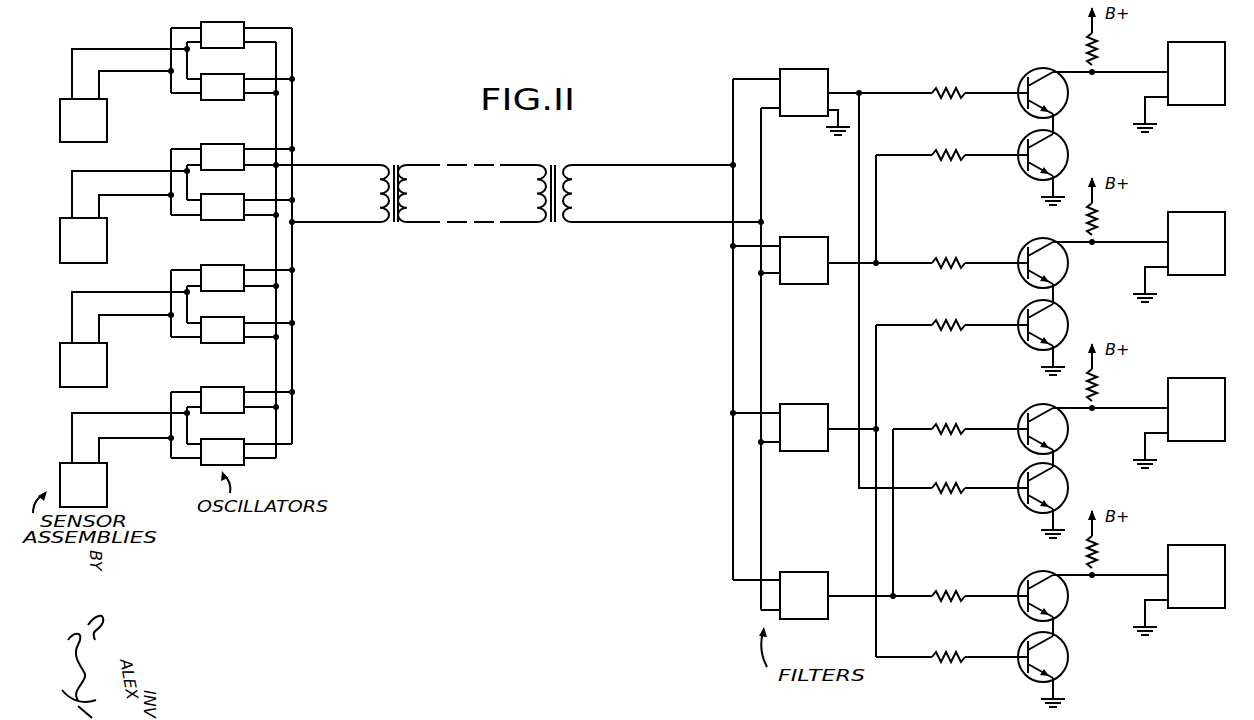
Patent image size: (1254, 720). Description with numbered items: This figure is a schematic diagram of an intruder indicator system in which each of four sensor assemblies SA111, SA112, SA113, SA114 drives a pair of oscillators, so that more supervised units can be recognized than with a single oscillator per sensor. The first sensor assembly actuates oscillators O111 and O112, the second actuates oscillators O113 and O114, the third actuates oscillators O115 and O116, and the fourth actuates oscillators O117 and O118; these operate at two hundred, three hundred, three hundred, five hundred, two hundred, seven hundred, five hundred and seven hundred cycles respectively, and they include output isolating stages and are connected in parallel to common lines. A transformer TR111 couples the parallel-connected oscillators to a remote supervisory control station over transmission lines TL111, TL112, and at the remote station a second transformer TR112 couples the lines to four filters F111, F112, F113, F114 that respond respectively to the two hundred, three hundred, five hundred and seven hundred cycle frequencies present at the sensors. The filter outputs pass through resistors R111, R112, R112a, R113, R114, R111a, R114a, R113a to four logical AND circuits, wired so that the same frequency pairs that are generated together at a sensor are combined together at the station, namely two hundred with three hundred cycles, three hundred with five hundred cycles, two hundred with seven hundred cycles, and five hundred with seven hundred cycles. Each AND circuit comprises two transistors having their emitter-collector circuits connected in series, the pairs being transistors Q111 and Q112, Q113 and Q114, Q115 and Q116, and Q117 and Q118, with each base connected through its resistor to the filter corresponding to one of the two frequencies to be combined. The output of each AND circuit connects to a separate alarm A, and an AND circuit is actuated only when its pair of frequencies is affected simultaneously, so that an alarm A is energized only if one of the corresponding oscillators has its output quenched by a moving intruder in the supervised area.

The sensor assembly SA111 is at (107, 126).
The sensor assembly SA112 is at (107, 239).
The sensor assembly SA113 is at (107, 368).
The sensor assembly SA114 is at (107, 485).
The oscillator O111 is at (245, 23).
The oscillator O112 is at (208, 100).
The oscillator O113 is at (207, 143).
The oscillator O114 is at (207, 193).
The oscillator O115 is at (207, 264).
The oscillator O116 is at (207, 316).
The oscillator O117 is at (207, 386).
The oscillator O118 is at (207, 438).
The transformer TR111 is at (408, 132).
The transformer TR112 is at (560, 156).
The transmission line TL111 is at (428, 163).
The transmission line TL112 is at (423, 223).
The filter F111 is at (790, 117).
The filter F112 is at (790, 285).
The filter F113 is at (790, 452).
The filter F114 is at (790, 620).
The resistor R111 is at (941, 92).
The resistor R112 is at (941, 154).
The resistor R112a is at (941, 262).
The resistor R113 is at (941, 324).
The resistor R114 is at (941, 428).
The resistor R111a is at (941, 487).
The resistor R114a is at (941, 595).
The resistor R113a is at (941, 656).
The transistor Q111 is at (1065, 106).
The transistor Q112 is at (1068, 160).
The transistor Q113 is at (1065, 276).
The transistor Q114 is at (1068, 330).
The transistor Q115 is at (1068, 429).
The transistor Q116 is at (1068, 489).
The transistor Q117 is at (1068, 594).
The transistor Q118 is at (1068, 658).
The alarm A is at (1190, 106).